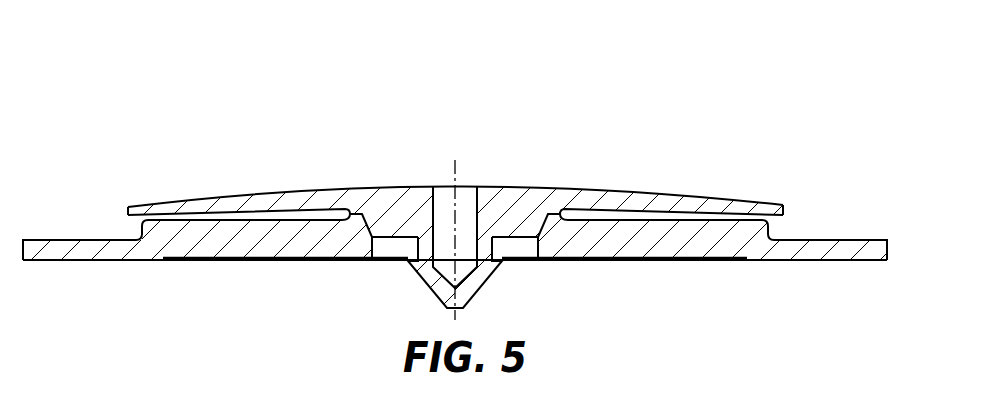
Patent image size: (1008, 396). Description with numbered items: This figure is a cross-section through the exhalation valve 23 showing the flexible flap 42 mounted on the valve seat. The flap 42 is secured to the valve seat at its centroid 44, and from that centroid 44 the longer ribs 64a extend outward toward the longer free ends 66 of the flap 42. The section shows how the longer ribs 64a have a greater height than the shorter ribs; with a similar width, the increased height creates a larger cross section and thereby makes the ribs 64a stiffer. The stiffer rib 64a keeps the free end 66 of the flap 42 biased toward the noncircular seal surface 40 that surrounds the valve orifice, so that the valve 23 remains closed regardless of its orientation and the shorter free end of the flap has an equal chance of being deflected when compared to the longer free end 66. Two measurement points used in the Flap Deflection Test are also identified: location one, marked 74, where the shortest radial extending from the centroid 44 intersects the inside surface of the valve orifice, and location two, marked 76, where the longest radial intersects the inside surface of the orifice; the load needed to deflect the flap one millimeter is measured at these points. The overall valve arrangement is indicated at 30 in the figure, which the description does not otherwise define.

The exhalation valve 23 is at (648, 264).
The assembly 30 is at (495, 231).
The seal surface 40 is at (147, 212).
The flexible flap 42 is at (436, 218).
The centroid 44 is at (453, 173).
The longer ribs 64a is at (303, 193).
The longer free end 66 is at (152, 203).
The location 1 74 is at (628, 218).
The location 2 76 is at (150, 218).